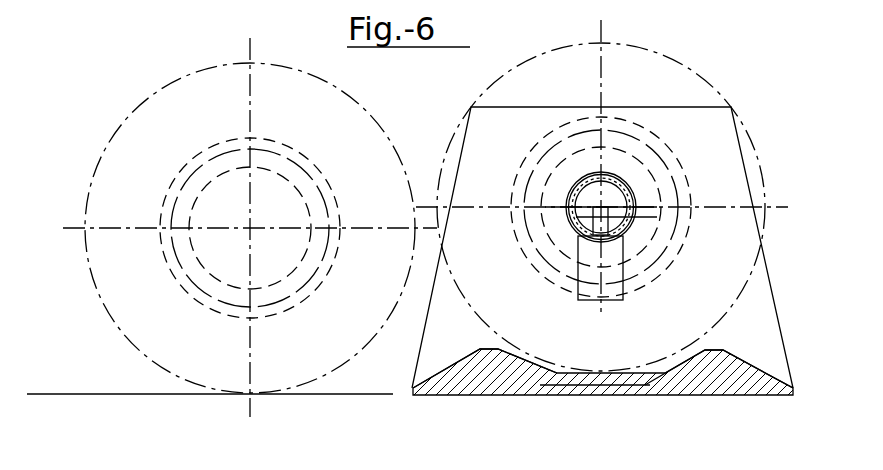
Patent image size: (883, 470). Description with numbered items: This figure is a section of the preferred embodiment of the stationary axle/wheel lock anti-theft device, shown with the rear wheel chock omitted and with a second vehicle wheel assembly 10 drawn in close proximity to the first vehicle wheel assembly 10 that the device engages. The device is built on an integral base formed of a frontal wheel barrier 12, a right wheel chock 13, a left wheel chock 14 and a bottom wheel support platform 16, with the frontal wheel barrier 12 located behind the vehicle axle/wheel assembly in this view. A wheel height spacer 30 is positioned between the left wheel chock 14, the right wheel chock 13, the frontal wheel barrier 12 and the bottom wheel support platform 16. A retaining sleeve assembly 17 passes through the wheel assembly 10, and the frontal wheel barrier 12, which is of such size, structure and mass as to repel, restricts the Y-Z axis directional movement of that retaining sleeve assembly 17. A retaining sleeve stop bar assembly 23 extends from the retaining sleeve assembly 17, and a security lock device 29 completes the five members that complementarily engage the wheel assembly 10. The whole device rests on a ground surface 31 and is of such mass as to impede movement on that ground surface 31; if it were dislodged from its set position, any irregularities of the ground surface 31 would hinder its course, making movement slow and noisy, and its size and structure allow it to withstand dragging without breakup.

The vehicle wheel assembly 10 is at (306, 110).
The frontal wheel barrier 12 is at (742, 138).
The retaining sleeve assembly 17 is at (631, 190).
The security lock device 29 is at (638, 222).
The retaining sleeve stop bar assembly 23 is at (623, 266).
The wheel height spacer 30 is at (633, 372).
The right wheel chock 13 is at (748, 366).
The bottom wheel support platform 16 is at (648, 386).
The left wheel chock 14 is at (448, 367).
The ground surface 31 is at (147, 394).